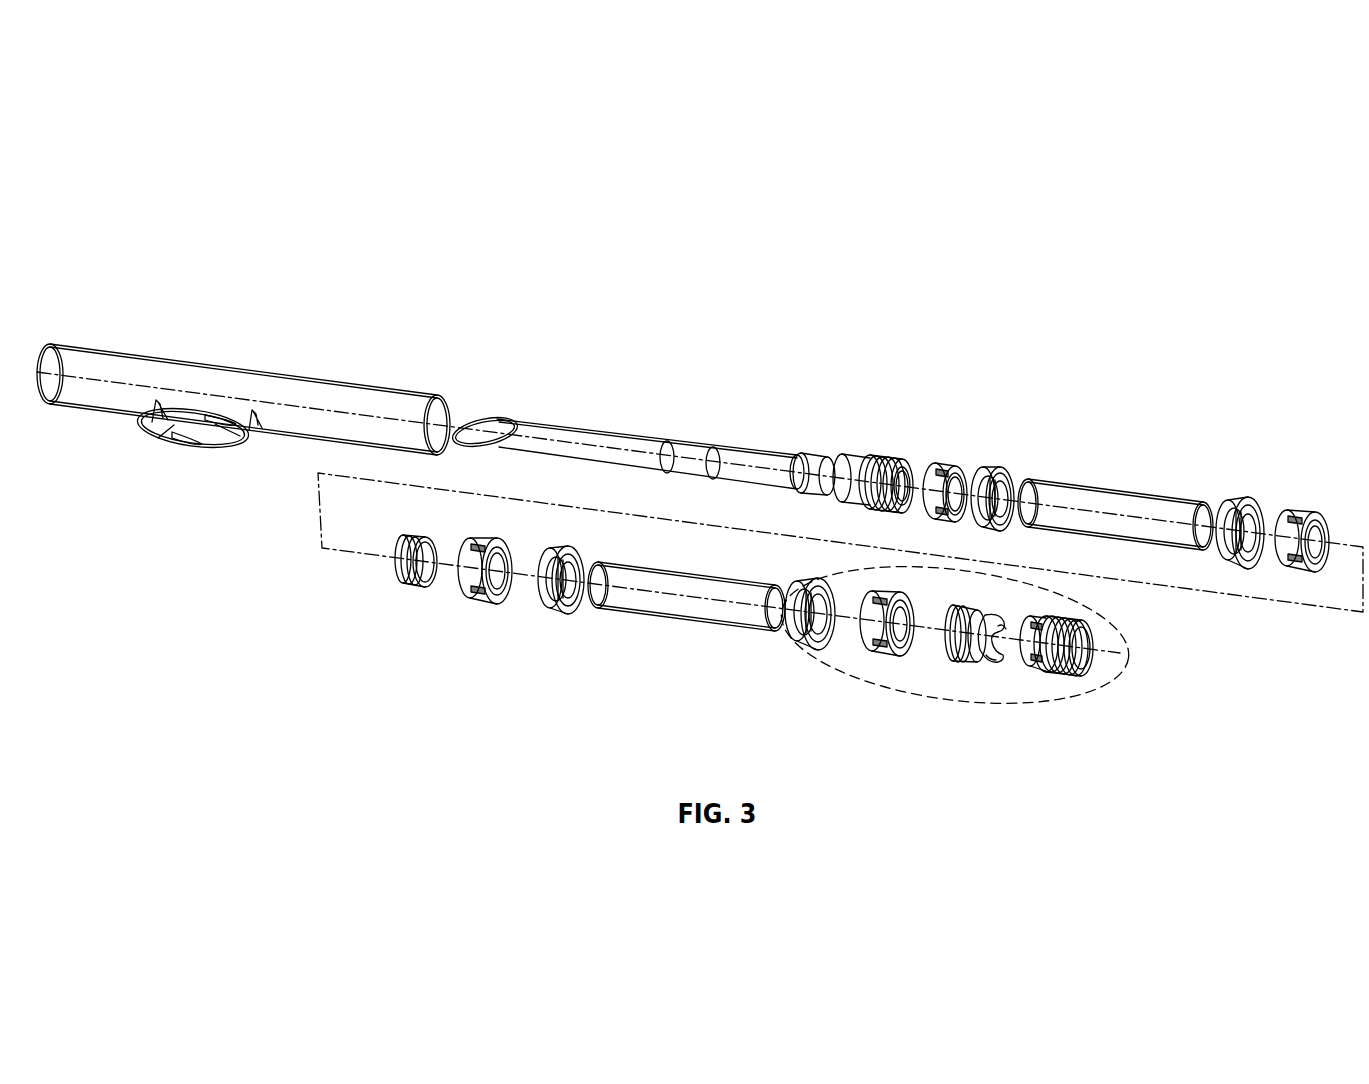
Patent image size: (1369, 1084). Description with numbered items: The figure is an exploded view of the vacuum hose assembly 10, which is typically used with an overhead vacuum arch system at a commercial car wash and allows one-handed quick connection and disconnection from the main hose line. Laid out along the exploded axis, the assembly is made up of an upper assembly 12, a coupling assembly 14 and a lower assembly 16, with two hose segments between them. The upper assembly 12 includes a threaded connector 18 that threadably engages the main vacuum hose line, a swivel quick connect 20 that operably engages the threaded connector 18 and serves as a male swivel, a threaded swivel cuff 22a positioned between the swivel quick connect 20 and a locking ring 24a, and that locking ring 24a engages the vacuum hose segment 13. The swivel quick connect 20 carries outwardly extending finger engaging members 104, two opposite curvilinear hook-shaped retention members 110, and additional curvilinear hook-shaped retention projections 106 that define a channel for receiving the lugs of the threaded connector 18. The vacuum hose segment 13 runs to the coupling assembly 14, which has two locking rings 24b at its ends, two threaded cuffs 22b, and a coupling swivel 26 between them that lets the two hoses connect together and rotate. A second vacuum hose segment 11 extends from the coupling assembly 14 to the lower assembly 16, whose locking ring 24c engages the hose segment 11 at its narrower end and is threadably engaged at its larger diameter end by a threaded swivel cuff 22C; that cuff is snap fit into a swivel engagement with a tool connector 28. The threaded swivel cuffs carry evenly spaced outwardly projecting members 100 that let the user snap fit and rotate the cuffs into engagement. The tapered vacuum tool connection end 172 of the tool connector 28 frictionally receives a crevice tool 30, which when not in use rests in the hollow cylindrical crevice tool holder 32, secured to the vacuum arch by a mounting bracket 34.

The vacuum hose assembly 10 is at (1270, 210).
The vacuum hose segment 11 is at (1110, 487).
The upper assembly 12 is at (1113, 636).
The vacuum hose segment 13 is at (642, 612).
The coupling assembly 14 is at (1245, 428).
The lower assembly 16 is at (1027, 368).
The threaded connector 18 is at (1063, 677).
The swivel quick connect 20 is at (968, 665).
The threaded swivel cuff 22C is at (950, 467).
The threaded swivel cuff 22a is at (880, 650).
The threaded cuff 22b is at (1300, 512).
The locking ring 24a is at (800, 648).
The locking ring 24b is at (1240, 500).
The locking ring 24c is at (985, 480).
The coupling swivel 26 is at (408, 588).
The tool connector 28 is at (893, 458).
The crevice tool 30 is at (627, 428).
The crevice tool holder 32 is at (343, 378).
The mounting bracket 34 is at (220, 437).
The outwardly projecting members 100 is at (870, 650).
The finger engaging members 104 is at (968, 608).
The curvilinear hook-shaped retention projections 106 is at (1000, 627).
The curvilinear hook-shaped retention members 110 is at (990, 663).
The vacuum tool connection end 172 is at (856, 475).